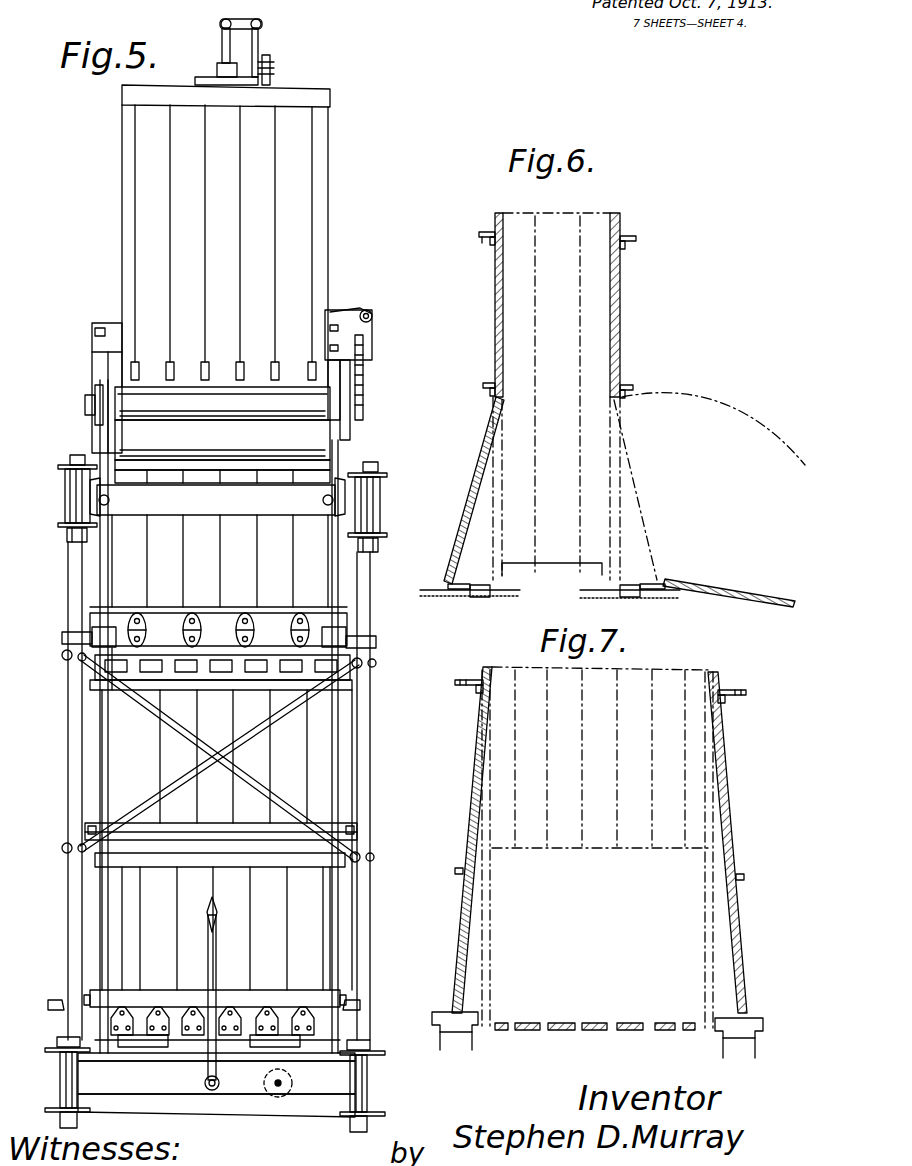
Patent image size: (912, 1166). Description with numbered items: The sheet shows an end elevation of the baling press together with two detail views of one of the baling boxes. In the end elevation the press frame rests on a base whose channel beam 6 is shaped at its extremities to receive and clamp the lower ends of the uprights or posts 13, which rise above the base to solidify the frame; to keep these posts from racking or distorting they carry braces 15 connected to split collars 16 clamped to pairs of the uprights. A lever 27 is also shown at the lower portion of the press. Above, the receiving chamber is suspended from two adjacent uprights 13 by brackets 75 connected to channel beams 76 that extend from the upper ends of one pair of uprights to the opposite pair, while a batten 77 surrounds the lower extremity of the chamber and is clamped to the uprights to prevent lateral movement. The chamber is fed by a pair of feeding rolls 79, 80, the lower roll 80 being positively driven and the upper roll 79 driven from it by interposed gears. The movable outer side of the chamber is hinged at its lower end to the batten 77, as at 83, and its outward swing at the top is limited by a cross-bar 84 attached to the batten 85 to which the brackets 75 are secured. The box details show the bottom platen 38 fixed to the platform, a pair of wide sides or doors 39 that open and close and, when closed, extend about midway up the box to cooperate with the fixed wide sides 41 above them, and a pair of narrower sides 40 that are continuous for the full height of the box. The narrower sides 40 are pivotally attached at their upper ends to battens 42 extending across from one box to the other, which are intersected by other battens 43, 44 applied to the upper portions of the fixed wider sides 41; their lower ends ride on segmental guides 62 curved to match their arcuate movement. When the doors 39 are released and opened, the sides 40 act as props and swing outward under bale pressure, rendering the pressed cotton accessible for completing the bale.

In FIG. 5, the channel beam 6 is at (358, 1085).
In FIG. 5, the uprights or posts 13 is at (66, 950).
In FIG. 5, the braces 15 is at (272, 775).
In FIG. 5, the split collars 16 is at (64, 660).
In FIG. 5, the lever 27 is at (216, 958).
In FIG. 6, the bottom platen 38 is at (519, 572).
In FIG. 7, the bottom platen 38 is at (525, 1022).
In FIG. 5, the wide sides or doors 39 is at (240, 935).
In FIG. 6, the wide sides or doors 39 is at (478, 462).
In FIG. 5, the narrower sides 40 is at (98, 915).
In FIG. 7, the narrower sides 40 is at (460, 920).
In FIG. 6, the fixed wide sides 41 is at (495, 323).
In FIG. 7, the battens 42 is at (470, 690).
In FIG. 6, the batten 43 is at (636, 238).
In FIG. 6, the batten 44 is at (486, 238).
In FIG. 7, the segmental guides 62 is at (440, 1038).
In FIG. 5, the brackets 75 is at (70, 494).
In FIG. 5, the channel beams 76 is at (90, 465).
In FIG. 5, the batten 77 is at (220, 640).
In FIG. 5, the upper feeding roll 79 is at (222, 403).
In FIG. 5, the lower feeding roll 80 is at (222, 440).
In FIG. 5, the hinge 83 is at (200, 614).
In FIG. 5, the cross-bar 84 is at (272, 518).
In FIG. 5, the batten 85 is at (340, 490).